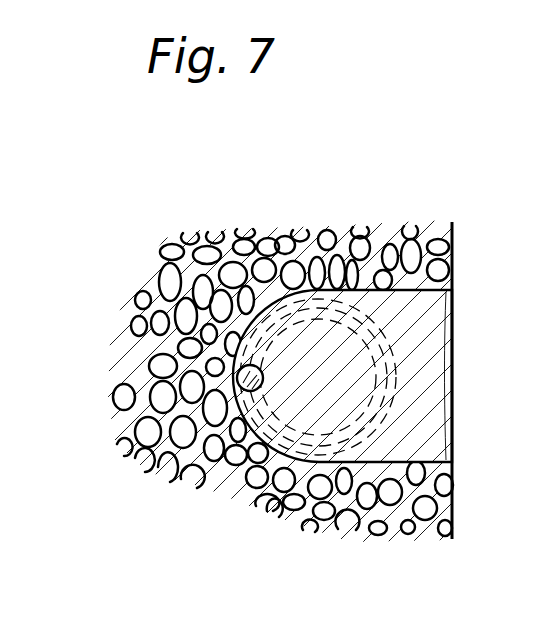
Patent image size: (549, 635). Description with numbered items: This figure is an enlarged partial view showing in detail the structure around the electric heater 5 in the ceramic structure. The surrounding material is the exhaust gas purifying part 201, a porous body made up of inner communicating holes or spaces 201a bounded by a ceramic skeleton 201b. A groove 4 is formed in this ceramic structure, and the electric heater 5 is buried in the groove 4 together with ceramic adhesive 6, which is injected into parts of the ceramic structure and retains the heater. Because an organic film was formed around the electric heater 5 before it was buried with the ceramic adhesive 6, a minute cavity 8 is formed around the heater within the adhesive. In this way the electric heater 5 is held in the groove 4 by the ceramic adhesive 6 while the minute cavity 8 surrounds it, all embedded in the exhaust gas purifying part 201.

The exhaust gas purifying part 201 is at (146, 289).
The inner communicating holes or spaces 201a is at (142, 333).
The ceramic skeleton 201b is at (150, 368).
The groove 4 is at (458, 318).
The ceramic adhesive 6 is at (430, 343).
The electric heater 5 is at (263, 377).
The minute cavity 8 is at (262, 390).